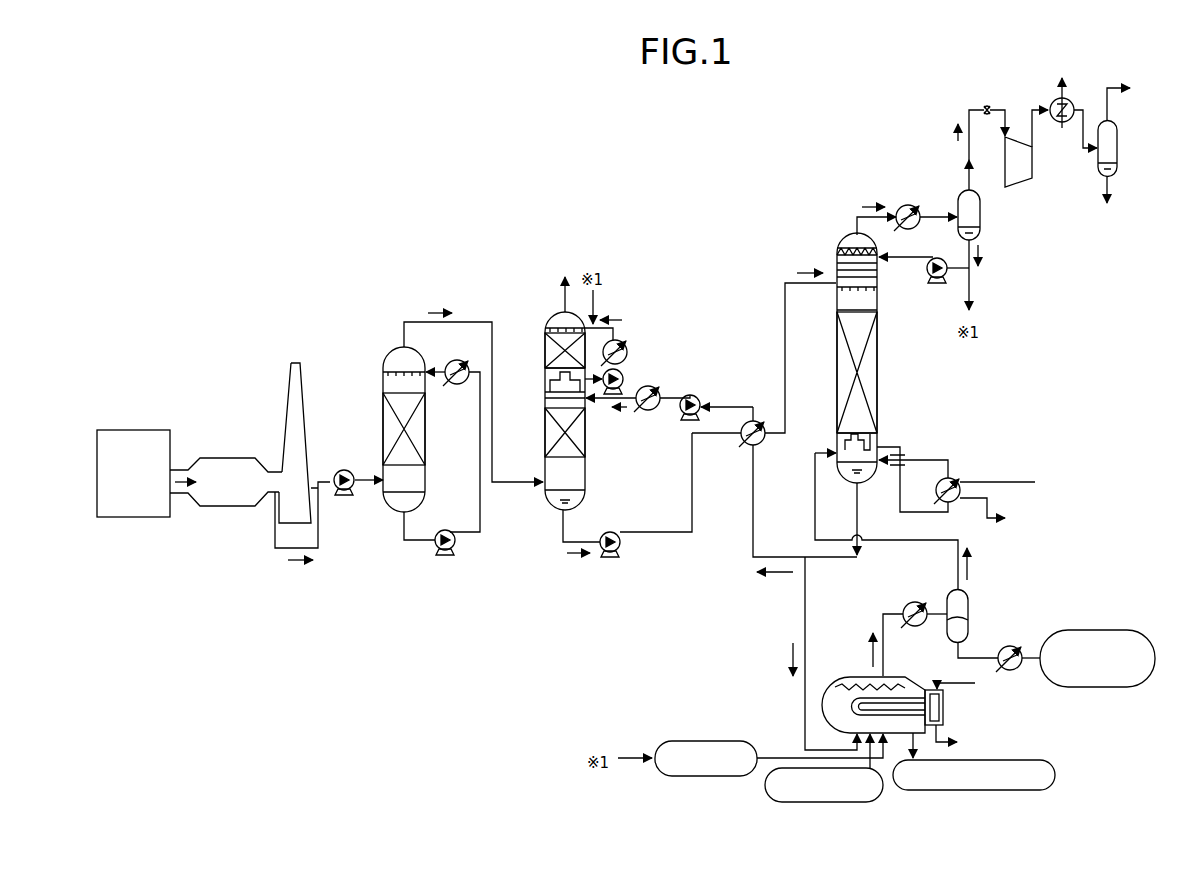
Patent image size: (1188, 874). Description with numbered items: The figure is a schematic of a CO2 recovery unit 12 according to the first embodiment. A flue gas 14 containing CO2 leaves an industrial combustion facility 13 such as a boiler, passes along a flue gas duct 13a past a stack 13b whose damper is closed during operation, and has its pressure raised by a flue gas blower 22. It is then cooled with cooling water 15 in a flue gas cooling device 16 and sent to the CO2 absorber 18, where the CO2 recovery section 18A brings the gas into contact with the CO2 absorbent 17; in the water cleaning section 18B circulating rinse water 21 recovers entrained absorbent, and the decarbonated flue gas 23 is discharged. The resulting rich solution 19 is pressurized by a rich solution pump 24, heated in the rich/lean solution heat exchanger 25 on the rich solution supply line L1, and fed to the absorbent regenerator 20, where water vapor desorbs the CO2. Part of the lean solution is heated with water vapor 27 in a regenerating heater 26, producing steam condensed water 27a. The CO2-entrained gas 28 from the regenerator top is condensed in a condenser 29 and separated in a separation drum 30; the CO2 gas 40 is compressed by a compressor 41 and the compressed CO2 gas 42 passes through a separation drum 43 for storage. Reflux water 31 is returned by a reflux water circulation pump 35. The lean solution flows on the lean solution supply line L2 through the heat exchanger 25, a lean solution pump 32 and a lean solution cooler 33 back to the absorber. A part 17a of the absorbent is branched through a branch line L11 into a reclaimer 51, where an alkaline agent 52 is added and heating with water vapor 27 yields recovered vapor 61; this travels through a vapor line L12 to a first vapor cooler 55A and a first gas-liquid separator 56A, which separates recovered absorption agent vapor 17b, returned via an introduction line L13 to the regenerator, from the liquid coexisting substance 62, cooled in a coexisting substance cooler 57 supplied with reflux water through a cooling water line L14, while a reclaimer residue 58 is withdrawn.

The CO2 recovery unit 12 is at (600, 115).
The industrial combustion facility 13 is at (152, 430).
The flue gas duct 13a is at (226, 458).
The stack 13b is at (290, 390).
The flue gas 14 is at (180, 470).
The flue gas blower 22 is at (343, 468).
The flue gas cooling device 16 is at (383, 355).
The cooling water 15 is at (446, 382).
The CO2 absorber 18 is at (575, 310).
The CO2 recovery section 18A is at (580, 440).
The water cleaning section 18B is at (550, 350).
The flue gas from which CO2 has been removed 23 is at (558, 300).
The circulating rinse water 21 is at (612, 318).
The CO2 absorbent (lean solution) 17 is at (648, 385).
The lean solution cooler 33 is at (655, 412).
The lean solution pump 32 is at (700, 395).
The rich solution pump 24 is at (618, 548).
The rich solution 19 is at (572, 560).
The rich solution supply line L1 is at (675, 535).
The rich/lean solution heat exchanger 25 is at (745, 445).
The lean solution supply line L2 is at (755, 500).
The absorbent regenerator 20 is at (845, 232).
The CO2-entrained gas 28 is at (872, 205).
The condenser 29 is at (907, 202).
The separation drum 30 is at (985, 217).
The reflux water circulation pump 35 is at (928, 275).
The reflux water 31 is at (985, 250).
The CO2 gas 40 is at (955, 140).
The compressor 41 is at (1025, 180).
The compressed/recovered CO2 gas 42 is at (1120, 80).
The separation drum 43 is at (1120, 142).
The regenerating heater 26 is at (950, 478).
The water vapor 27 is at (1015, 481).
The steam condensed water 27a is at (986, 620).
The introduction line L13 is at (870, 540).
The recovered absorption agent vapor 17b is at (975, 563).
The first gas-liquid separator 56A is at (978, 610).
The first vapor cooler 55A is at (917, 600).
The vapor line L12 is at (895, 630).
The recovered vapor 61 is at (885, 653).
The cooling water line L14 is at (972, 653).
The coexisting substance cooler 57 is at (1014, 672).
The coexisting substance (liquid) 62 is at (1100, 630).
The branch line L11 is at (805, 622).
The part of the absorbent 17a is at (790, 660).
The reclaimer 51 is at (833, 676).
The alkaline agent 52 is at (765, 786).
The reclaimer residue 58 is at (1030, 760).